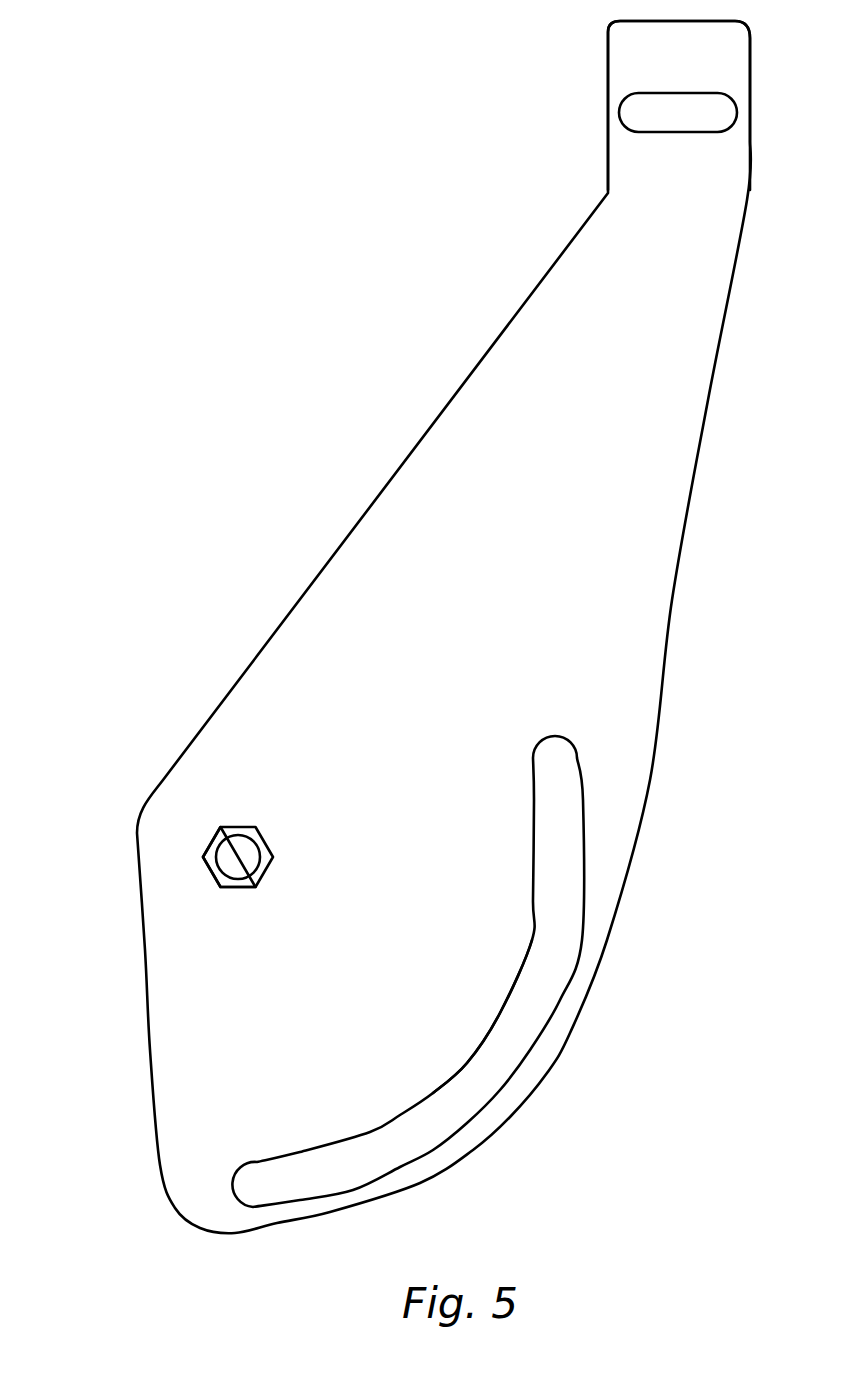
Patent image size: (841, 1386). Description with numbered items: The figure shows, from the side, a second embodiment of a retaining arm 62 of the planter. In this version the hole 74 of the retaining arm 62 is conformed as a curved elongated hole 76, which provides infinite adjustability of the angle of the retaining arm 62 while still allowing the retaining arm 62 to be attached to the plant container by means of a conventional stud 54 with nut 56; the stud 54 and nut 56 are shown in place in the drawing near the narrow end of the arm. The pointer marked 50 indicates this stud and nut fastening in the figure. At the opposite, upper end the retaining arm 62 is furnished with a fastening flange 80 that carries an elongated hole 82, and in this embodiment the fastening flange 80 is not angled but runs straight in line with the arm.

The fastener assembly 50 is at (208, 825).
The stud 54 is at (232, 862).
The nut 56 is at (233, 890).
The retaining arm 62 is at (538, 530).
The hole 74 is at (542, 817).
The curved elongated hole 76 is at (507, 1017).
The fastening flange 80 is at (618, 60).
The elongated hole 82 is at (632, 115).